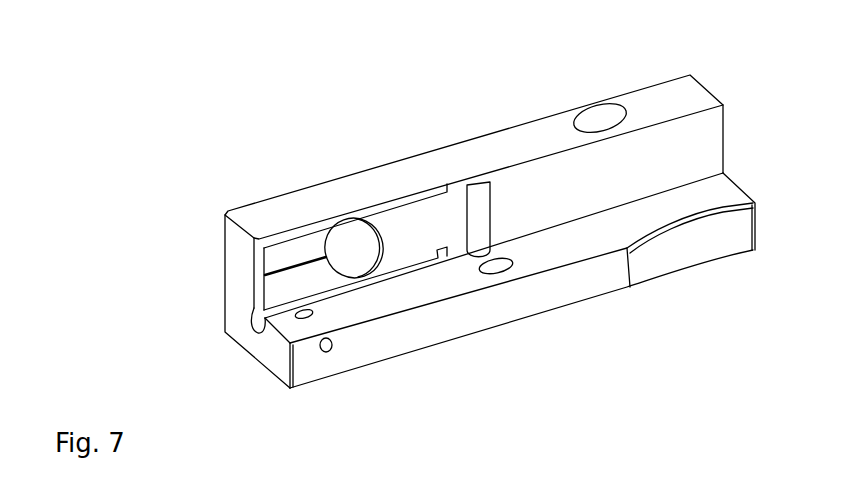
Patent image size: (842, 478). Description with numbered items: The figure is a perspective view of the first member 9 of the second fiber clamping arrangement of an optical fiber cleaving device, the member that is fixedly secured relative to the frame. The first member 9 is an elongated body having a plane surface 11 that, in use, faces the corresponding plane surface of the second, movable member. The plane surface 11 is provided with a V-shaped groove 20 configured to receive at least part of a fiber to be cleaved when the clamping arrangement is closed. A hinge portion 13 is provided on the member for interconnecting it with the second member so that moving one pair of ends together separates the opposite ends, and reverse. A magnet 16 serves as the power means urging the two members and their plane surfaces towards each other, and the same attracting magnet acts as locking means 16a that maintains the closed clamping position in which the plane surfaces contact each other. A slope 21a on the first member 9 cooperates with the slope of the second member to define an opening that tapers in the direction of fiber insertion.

The first member 9 is at (597, 347).
The plane surface 11 is at (297, 249).
The hinge portion 13 is at (477, 200).
The magnet 16 is at (355, 222).
The locking means 16a is at (362, 258).
The V-shaped groove 20 is at (283, 268).
The slope 21a is at (384, 207).